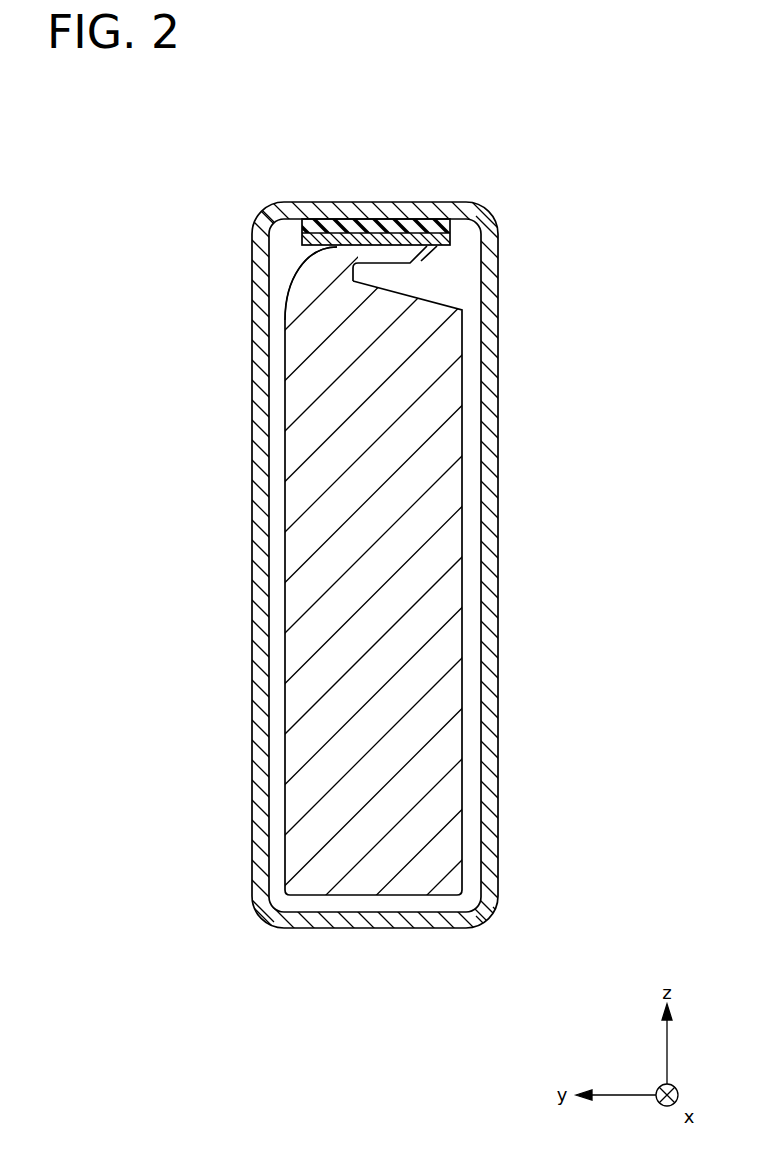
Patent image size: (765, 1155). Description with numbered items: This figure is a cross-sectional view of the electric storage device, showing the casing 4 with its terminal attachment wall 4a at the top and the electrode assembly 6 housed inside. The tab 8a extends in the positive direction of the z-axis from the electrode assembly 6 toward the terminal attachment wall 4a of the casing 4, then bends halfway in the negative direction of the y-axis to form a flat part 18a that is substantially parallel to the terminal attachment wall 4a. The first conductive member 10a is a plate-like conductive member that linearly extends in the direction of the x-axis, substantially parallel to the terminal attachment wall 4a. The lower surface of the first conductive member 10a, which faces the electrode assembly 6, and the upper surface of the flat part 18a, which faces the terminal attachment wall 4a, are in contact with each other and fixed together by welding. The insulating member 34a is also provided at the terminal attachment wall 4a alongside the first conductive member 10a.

The casing 4 is at (498, 506).
The terminal attachment wall 4a is at (311, 208).
The electrode assembly 6 is at (447, 638).
The tab 8a is at (300, 262).
The first conductive member 10a is at (365, 228).
The flat part 18a is at (383, 255).
The insulating member 34a is at (427, 227).